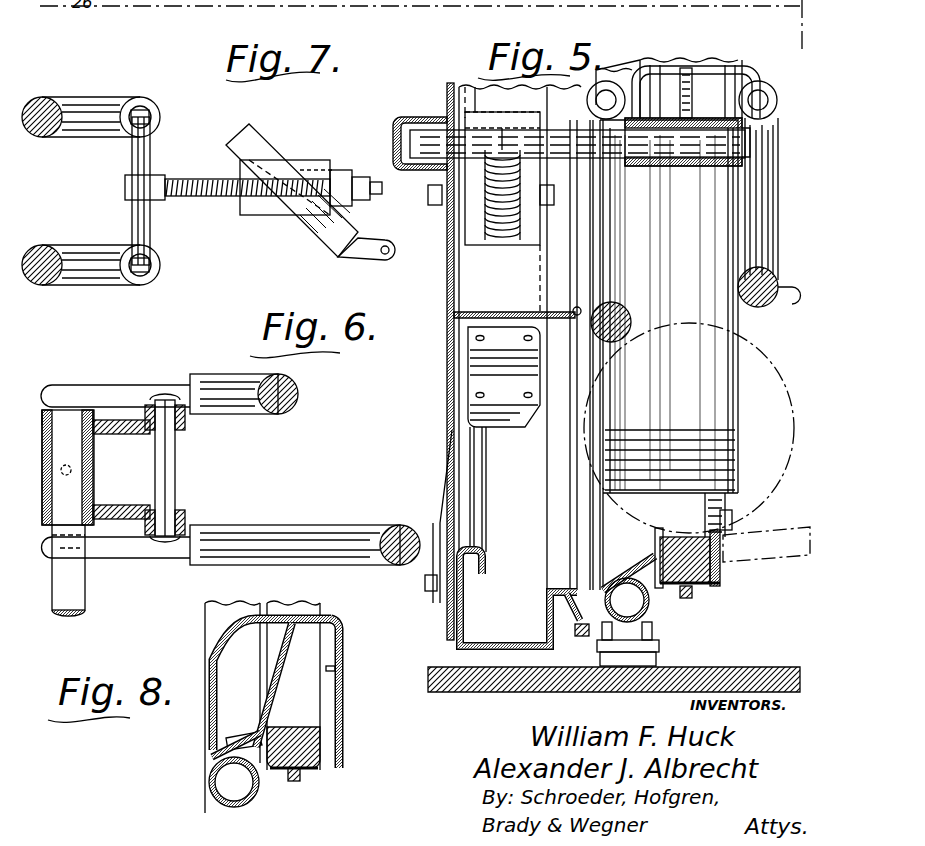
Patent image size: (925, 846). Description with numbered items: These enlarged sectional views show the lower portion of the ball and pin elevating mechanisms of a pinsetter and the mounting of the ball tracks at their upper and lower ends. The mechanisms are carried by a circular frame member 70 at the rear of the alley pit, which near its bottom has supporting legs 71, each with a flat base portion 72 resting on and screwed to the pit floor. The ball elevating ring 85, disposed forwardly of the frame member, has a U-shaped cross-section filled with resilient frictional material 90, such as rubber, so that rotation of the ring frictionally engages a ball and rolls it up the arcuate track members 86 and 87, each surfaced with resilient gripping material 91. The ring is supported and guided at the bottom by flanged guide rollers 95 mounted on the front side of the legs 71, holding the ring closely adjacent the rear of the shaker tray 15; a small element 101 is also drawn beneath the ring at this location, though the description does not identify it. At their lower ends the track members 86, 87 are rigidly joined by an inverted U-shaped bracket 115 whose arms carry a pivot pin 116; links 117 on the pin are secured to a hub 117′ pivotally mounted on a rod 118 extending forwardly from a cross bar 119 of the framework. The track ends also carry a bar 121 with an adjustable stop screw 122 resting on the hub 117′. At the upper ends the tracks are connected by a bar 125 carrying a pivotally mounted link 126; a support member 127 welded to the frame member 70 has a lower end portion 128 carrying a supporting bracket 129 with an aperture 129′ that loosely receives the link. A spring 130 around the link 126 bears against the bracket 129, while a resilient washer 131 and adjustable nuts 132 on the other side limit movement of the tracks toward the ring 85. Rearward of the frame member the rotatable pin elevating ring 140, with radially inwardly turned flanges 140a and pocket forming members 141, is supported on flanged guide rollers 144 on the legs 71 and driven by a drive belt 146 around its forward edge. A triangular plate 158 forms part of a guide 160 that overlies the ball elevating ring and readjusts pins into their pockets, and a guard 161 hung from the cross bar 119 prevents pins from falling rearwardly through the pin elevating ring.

In FIG. 5, the shaker tray 15 is at (788, 532).
In FIG. 8, the circular frame member 70 is at (250, 805).
In FIG. 5, the circular frame member 70 is at (650, 608).
In FIG. 5, the supporting legs 71 is at (680, 622).
In FIG. 5, the flat base portion 72 is at (660, 646).
In FIG. 8, the ball elevating ring 85 is at (318, 762).
In FIG. 5, the ball elevating ring 85 is at (690, 596).
In FIG. 7, the ball track member 86 is at (86, 246).
In FIG. 6, the ball track member 86 is at (290, 414).
In FIG. 5, the ball track member 86 is at (755, 210).
In FIG. 7, the ball track member 87 is at (92, 130).
In FIG. 6, the ball track member 87 is at (296, 532).
In FIG. 5, the ball track member 87 is at (612, 278).
In FIG. 8, the resilient frictional material 90 is at (310, 772).
In FIG. 5, the resilient frictional material 90 is at (714, 572).
In FIG. 5, the resilient gripping material 91 is at (630, 336).
In FIG. 5, the flanged guide rollers 95 is at (705, 588).
In FIG. 8, the stud 101 is at (293, 782).
In FIG. 5, the stud 101 is at (690, 606).
In FIG. 6, the inverted U-shaped bracket 115 is at (180, 462).
In FIG. 5, the inverted U-shaped bracket 115 is at (735, 70).
In FIG. 6, the pivot pin 116 is at (167, 478).
In FIG. 6, the links 117 is at (108, 420).
In FIG. 6, the hub 117′ is at (46, 410).
In FIG. 6, the rod 118 is at (70, 576).
In FIG. 5, the rod 118 is at (703, 140).
In FIG. 5, the cross bar 119 is at (403, 118).
In FIG. 5, the bar 121 is at (652, 70).
In FIG. 6, the adjustable stop screw 122 is at (94, 470).
In FIG. 5, the adjustable stop screw 122 is at (700, 78).
In FIG. 7, the bar 125 is at (145, 150).
In FIG. 7, the link 126 is at (162, 200).
In FIG. 7, the support member 127 is at (368, 256).
In FIG. 7, the lower end portion 128 is at (250, 140).
In FIG. 7, the supporting bracket 129 is at (270, 216).
In FIG. 7, the aperture 129′ is at (340, 172).
In FIG. 7, the spring 130 is at (215, 198).
In FIG. 7, the resilient washer 131 is at (345, 206).
In FIG. 7, the adjustable nuts 132 is at (358, 177).
In FIG. 5, the pin elevating ring 140 is at (505, 662).
In FIG. 5, the radially inwardly turned flanges 140a is at (464, 595).
In FIG. 5, the pocket forming members 141 is at (566, 588).
In FIG. 5, the flanged guide rollers 144 is at (440, 628).
In FIG. 5, the drive belt 146 is at (577, 637).
In FIG. 8, the triangular plate 158 is at (344, 712).
In FIG. 8, the guide 160 is at (226, 638).
In FIG. 5, the guard 161 is at (447, 366).